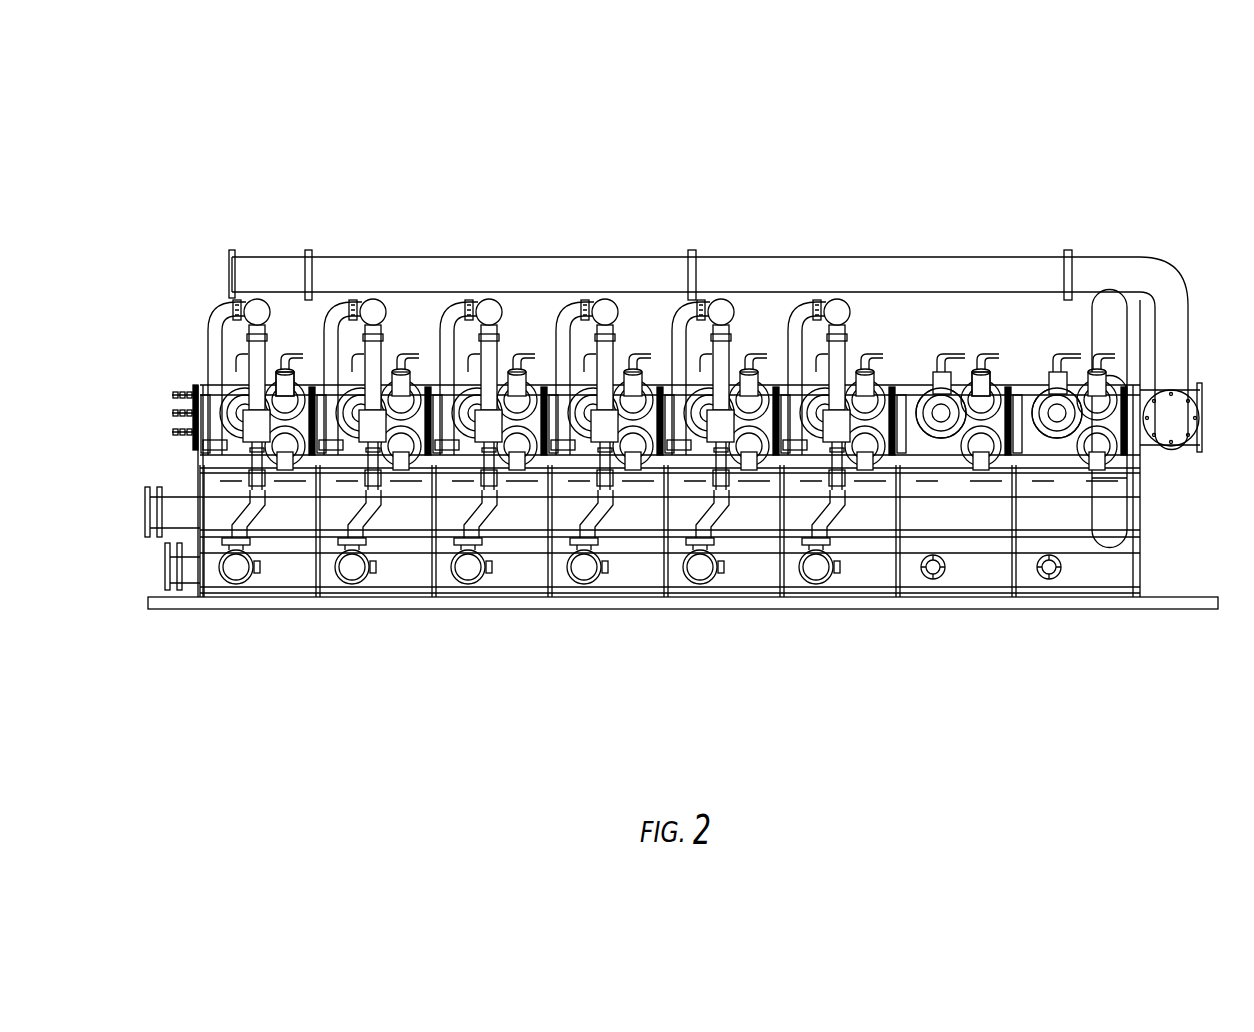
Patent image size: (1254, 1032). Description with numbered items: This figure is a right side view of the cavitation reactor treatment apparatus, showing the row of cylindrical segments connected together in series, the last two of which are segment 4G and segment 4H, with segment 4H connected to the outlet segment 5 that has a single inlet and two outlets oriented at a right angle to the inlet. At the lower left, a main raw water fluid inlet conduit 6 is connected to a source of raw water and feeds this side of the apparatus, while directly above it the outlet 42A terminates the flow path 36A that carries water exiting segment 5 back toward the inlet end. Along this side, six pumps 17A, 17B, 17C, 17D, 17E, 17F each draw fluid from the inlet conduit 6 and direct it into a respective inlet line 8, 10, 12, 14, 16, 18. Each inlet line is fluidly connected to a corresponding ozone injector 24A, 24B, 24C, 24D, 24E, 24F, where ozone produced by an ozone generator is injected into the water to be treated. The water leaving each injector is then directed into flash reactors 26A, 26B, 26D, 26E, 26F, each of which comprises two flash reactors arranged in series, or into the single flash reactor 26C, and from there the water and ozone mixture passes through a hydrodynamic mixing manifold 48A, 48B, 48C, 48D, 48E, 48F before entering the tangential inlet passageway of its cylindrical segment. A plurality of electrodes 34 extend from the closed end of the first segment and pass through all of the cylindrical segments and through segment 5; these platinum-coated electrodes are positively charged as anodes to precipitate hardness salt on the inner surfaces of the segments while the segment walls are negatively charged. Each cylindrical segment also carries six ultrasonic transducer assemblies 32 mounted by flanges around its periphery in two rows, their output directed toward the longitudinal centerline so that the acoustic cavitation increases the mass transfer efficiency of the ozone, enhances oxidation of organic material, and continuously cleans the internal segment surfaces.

The cylindrical segment 4G is at (890, 365).
The cylindrical segment 4H is at (990, 415).
The outlet segment 5 is at (1188, 448).
The main raw water fluid inlet conduit 6 is at (170, 582).
The inlet line 8 is at (258, 524).
The inlet line 10 is at (378, 524).
The inlet line 12 is at (494, 524).
The inlet line 14 is at (610, 524).
The inlet line 16 is at (726, 524).
The inlet line 18 is at (870, 520).
The pump 17A is at (235, 583).
The pump 17B is at (352, 583).
The pump 17C is at (468, 583).
The pump 17D is at (584, 583).
The pump 17E is at (700, 583).
The pump 17F is at (816, 583).
The ozone injector 24A is at (262, 478).
The ozone injector 24B is at (365, 483).
The ozone injector 24C is at (481, 483).
The ozone injector 24D is at (597, 483).
The ozone injector 24E is at (713, 483).
The ozone injector 24F is at (829, 483).
The flash reactors 26A is at (185, 425).
The flash reactors 26B is at (373, 425).
The flash reactor 26C is at (490, 425).
The flash reactors 26D is at (606, 425).
The flash reactors 26E is at (722, 425).
The flash reactors 26F is at (838, 425).
The ultrasonic transducer assembly 32 is at (280, 365).
The electrodes 34 is at (185, 395).
The flow path 36A is at (1000, 270).
The outlet 42A is at (148, 512).
The hydrodynamic mixing manifold 48A is at (259, 312).
The hydrodynamic mixing manifold 48B is at (373, 313).
The hydrodynamic mixing manifold 48C is at (489, 313).
The hydrodynamic mixing manifold 48D is at (605, 313).
The hydrodynamic mixing manifold 48E is at (721, 313).
The hydrodynamic mixing manifold 48F is at (837, 313).